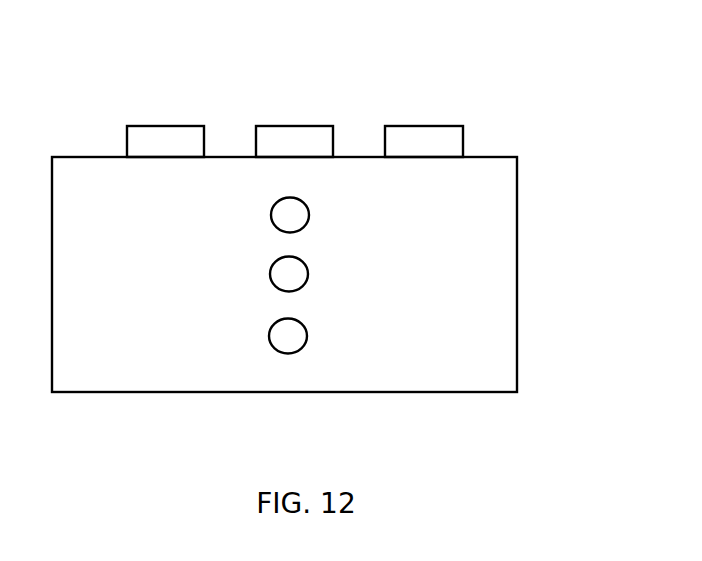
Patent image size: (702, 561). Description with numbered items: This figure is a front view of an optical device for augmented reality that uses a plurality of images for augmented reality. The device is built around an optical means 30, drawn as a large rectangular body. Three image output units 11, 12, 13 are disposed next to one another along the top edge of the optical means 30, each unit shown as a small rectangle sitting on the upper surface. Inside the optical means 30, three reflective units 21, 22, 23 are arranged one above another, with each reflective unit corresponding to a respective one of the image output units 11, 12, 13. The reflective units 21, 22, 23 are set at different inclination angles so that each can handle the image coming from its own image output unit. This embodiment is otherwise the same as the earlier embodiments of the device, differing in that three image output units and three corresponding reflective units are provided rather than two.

The image output unit 11 is at (187, 126).
The image output unit 12 is at (316, 126).
The image output unit 13 is at (445, 126).
The reflective unit 21 is at (271, 213).
The reflective unit 22 is at (269, 279).
The reflective unit 23 is at (268, 340).
The optical means 30 is at (517, 274).